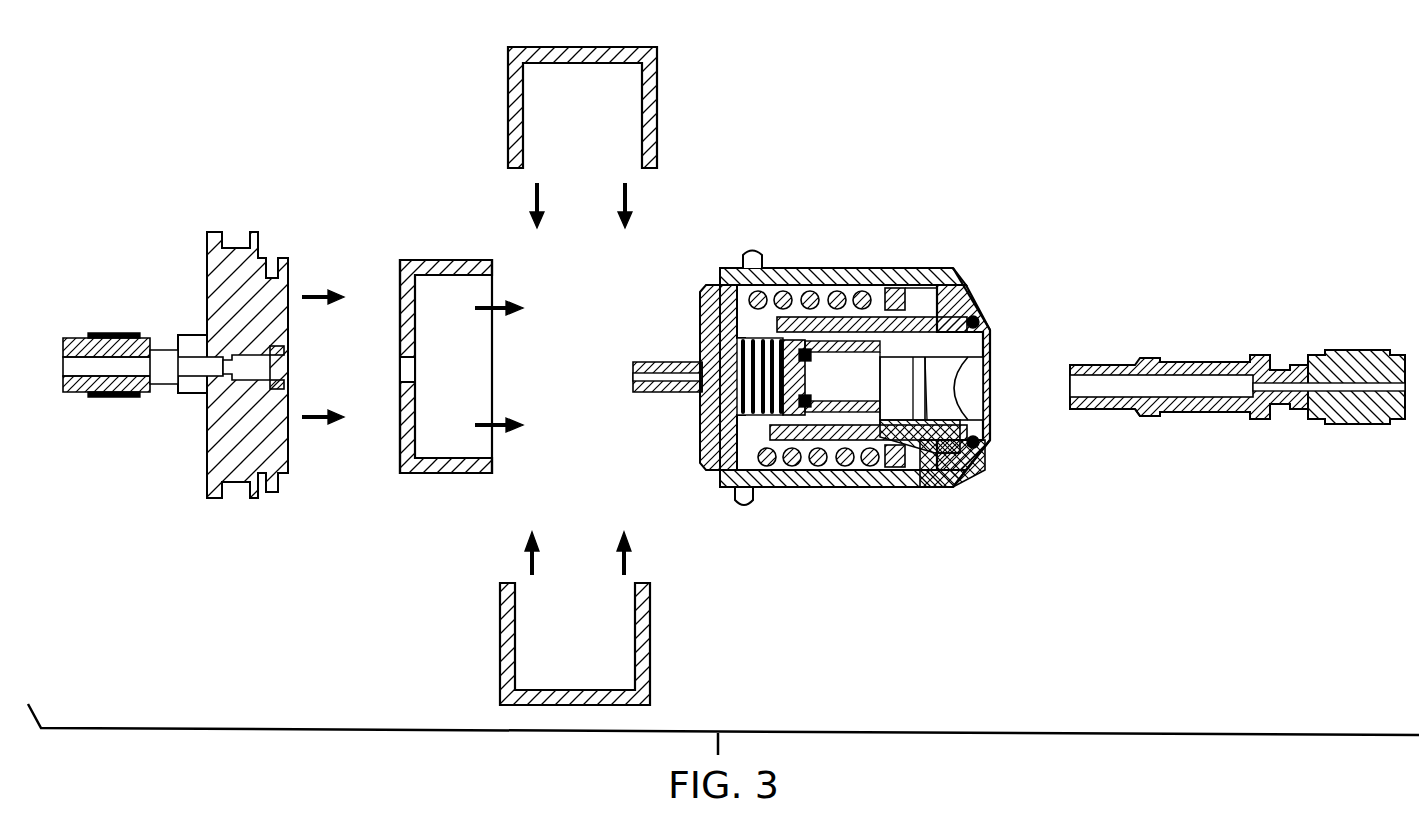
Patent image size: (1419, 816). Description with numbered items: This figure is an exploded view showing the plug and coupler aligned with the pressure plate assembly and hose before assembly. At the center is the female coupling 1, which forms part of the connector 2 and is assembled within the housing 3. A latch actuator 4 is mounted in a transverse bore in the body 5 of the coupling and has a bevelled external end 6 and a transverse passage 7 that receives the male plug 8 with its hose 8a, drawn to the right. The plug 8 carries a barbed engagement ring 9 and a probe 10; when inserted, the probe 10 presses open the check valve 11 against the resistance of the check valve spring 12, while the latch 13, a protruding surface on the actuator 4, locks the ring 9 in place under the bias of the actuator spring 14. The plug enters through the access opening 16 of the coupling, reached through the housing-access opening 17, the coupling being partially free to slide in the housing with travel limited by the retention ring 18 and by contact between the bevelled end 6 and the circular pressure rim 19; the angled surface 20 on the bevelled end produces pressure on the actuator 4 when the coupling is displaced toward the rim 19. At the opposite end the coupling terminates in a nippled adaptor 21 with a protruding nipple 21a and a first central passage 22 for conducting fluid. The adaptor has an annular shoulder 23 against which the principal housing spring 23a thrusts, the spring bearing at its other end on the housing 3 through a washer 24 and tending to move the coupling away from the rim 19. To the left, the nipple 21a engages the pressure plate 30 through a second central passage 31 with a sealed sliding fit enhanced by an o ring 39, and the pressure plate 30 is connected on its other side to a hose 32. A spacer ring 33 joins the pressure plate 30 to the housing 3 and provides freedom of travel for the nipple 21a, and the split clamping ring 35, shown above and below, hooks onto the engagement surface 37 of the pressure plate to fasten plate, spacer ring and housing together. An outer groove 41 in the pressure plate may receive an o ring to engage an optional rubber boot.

The female coupling 1 is at (990, 330).
The connector 2 is at (990, 440).
The housing 3 is at (826, 482).
The latch actuator 4 is at (968, 482).
The body 5 is at (962, 300).
The bevelled external end 6 is at (918, 452).
The transverse passage 7 is at (938, 398).
The male plug 8 is at (1197, 362).
The hose 8a is at (1320, 416).
The barbed engagement ring 9 is at (1150, 416).
The probe 10 is at (1096, 365).
The check valve 11 is at (776, 374).
The check valve spring 12 is at (769, 340).
The latch 13 is at (887, 462).
The actuator spring 14 is at (918, 317).
The access opening 16 is at (972, 371).
The housing-access opening 17 is at (981, 454).
The retention ring 18 is at (979, 312).
The circular pressure rim 19 is at (950, 490).
The surface 20 is at (926, 462).
The nippled adaptor 21 is at (712, 325).
The nipple 21a is at (684, 394).
The first central passage 22 is at (633, 378).
The annular shoulder 23 is at (733, 478).
The principal housing spring 23a is at (783, 471).
The washer 24 is at (890, 288).
The pressure plate 30 is at (278, 293).
The second central passage 31 is at (140, 365).
The hose 32 is at (100, 340).
The spacer ring 33 is at (430, 474).
The split clamping ring 35 is at (508, 103).
The engagement surface 37 is at (270, 260).
The o ring 39 is at (288, 354).
The outer groove 41 is at (232, 237).